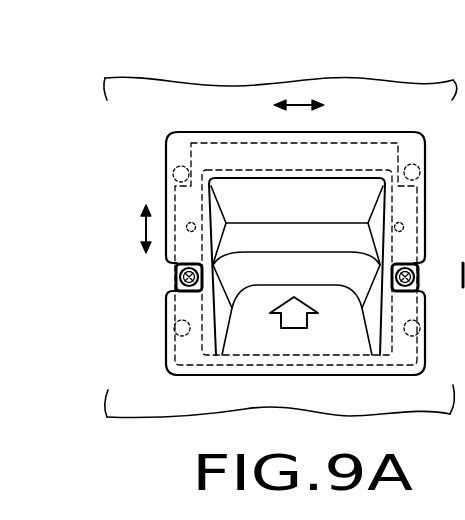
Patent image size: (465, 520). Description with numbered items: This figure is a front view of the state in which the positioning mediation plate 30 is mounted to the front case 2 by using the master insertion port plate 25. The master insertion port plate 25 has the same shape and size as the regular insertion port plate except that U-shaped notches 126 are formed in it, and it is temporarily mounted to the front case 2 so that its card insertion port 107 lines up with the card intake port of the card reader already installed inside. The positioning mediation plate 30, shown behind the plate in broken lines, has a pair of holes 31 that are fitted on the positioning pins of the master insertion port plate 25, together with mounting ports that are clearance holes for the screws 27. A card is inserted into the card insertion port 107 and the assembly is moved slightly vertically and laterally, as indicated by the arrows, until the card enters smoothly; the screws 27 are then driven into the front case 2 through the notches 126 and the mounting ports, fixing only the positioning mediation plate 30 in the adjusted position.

The front case 2 is at (283, 76).
The master insertion port plate 25 is at (184, 129).
The screws 27 is at (178, 283).
The positioning mediation plate 30 is at (347, 144).
The holes 31 is at (400, 223).
The card insertion port 107 is at (259, 227).
The U-shaped notches 126 is at (175, 270).